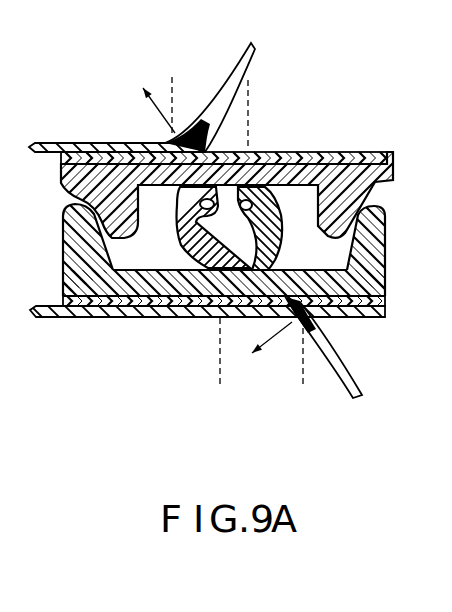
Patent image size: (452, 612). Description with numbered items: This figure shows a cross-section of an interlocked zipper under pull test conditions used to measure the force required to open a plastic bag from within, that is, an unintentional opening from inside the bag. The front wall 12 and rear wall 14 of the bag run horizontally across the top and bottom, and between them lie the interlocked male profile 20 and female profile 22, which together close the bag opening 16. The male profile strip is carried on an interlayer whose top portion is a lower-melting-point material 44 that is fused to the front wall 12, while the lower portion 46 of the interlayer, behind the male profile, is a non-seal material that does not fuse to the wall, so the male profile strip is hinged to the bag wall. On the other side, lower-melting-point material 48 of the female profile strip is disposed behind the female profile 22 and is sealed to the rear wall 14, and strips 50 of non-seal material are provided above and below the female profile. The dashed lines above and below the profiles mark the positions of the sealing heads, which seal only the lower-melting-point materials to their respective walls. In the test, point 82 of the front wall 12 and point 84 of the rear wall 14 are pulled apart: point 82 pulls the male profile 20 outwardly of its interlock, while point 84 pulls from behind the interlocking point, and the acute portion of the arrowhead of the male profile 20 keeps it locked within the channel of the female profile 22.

The front wall 12 is at (88, 142).
The rear wall 14 is at (140, 309).
The opening 16 is at (36, 218).
The male profile 20 is at (339, 202).
The female profile 22 is at (373, 277).
The lower-melting-point material 44 is at (62, 157).
The lower portion of the interlayer 46 is at (390, 148).
The lower-melting-point material 48 is at (198, 306).
The strips of non-seal material 50 is at (66, 298).
The point of bag wall 12 82 is at (254, 50).
The point of bag wall 14 84 is at (350, 385).